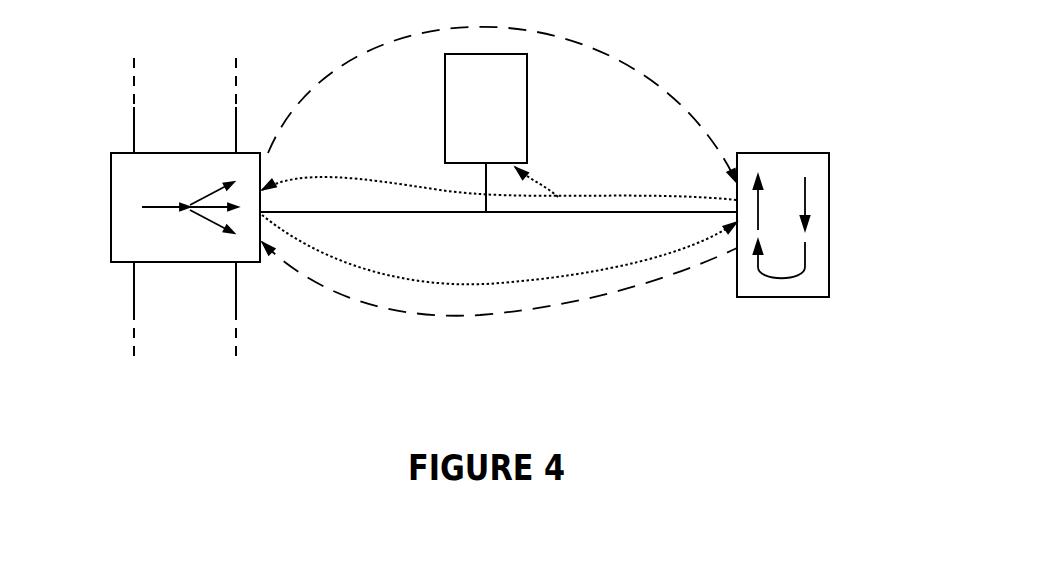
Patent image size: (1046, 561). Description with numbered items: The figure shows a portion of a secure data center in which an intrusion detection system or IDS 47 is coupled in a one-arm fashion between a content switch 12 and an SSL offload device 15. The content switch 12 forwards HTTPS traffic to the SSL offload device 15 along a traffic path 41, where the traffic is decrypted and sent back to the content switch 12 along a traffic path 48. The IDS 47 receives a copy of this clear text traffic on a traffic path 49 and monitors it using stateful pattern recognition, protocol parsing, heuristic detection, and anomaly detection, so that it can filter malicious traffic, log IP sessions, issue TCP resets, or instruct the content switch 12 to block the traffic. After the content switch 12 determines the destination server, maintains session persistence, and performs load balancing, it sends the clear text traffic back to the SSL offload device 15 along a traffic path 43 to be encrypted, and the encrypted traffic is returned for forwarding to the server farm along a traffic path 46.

The content switch 12 is at (111, 250).
The SSL offload device 15 is at (829, 275).
The traffic path 41 is at (657, 90).
The traffic path 43 is at (655, 262).
The traffic path 46 is at (455, 316).
The intrusion detection system 47 is at (445, 96).
The traffic path 48 is at (325, 177).
The traffic path 49 is at (535, 187).